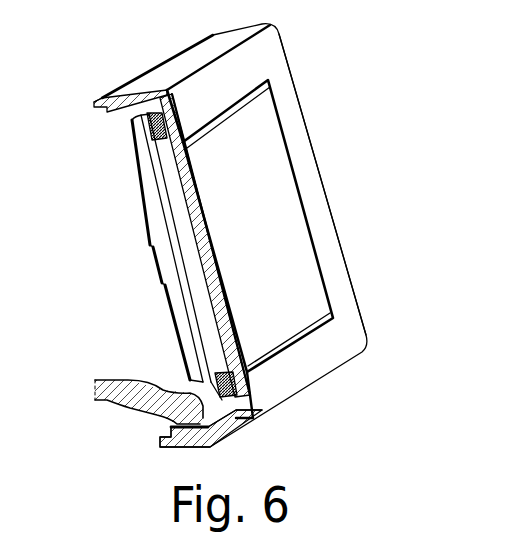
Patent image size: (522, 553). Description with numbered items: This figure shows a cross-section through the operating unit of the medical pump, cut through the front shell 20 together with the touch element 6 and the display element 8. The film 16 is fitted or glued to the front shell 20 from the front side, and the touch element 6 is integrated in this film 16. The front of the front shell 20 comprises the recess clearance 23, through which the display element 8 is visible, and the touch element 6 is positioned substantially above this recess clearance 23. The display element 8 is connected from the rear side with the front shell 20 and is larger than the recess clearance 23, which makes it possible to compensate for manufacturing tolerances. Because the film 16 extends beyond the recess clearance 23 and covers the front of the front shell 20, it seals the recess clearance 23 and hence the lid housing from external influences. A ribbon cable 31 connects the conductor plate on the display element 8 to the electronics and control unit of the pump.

The front shell 20 is at (90, 93).
The film 16 is at (225, 92).
The touch element 6 is at (240, 212).
The recess clearance 23 is at (318, 258).
The display element 8 is at (180, 233).
The ribbon cable 31 is at (128, 388).